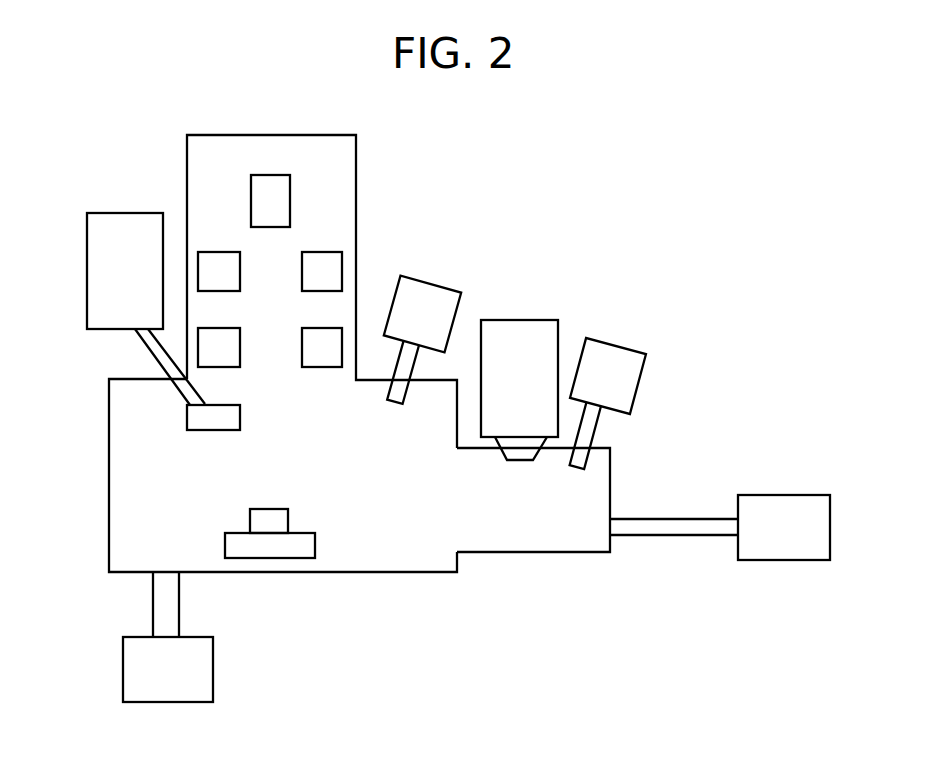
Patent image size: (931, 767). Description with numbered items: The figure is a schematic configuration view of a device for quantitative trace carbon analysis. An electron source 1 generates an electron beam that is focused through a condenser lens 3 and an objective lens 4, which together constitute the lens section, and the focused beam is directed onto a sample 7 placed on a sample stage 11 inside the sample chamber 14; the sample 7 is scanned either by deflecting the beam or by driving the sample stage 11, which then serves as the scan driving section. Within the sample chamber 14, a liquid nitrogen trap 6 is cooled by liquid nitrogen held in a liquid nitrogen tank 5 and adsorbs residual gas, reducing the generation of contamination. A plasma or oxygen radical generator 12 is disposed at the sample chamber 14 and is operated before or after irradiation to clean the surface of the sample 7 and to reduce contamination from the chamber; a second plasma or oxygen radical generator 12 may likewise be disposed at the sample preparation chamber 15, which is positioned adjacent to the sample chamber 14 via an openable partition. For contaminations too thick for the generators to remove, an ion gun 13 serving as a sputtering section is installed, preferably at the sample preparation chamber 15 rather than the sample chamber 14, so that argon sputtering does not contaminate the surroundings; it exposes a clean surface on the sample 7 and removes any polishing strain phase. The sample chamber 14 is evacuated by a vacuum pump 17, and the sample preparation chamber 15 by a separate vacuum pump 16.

The electron source 1 is at (282, 189).
The condenser lens 3 is at (216, 251).
The objective lens 4 is at (236, 368).
The liquid nitrogen tank 5 is at (85, 275).
The liquid nitrogen trap 6 is at (186, 414).
The sample 7 is at (268, 508).
The sample stage 11 is at (224, 540).
The plasma or oxygen radical generator 12 is at (428, 278).
The ion gun 13 is at (515, 318).
The sample chamber 14 is at (108, 480).
The sample preparation chamber 15 is at (612, 488).
The vacuum pump 16 is at (782, 494).
The vacuum pump 17 is at (214, 665).